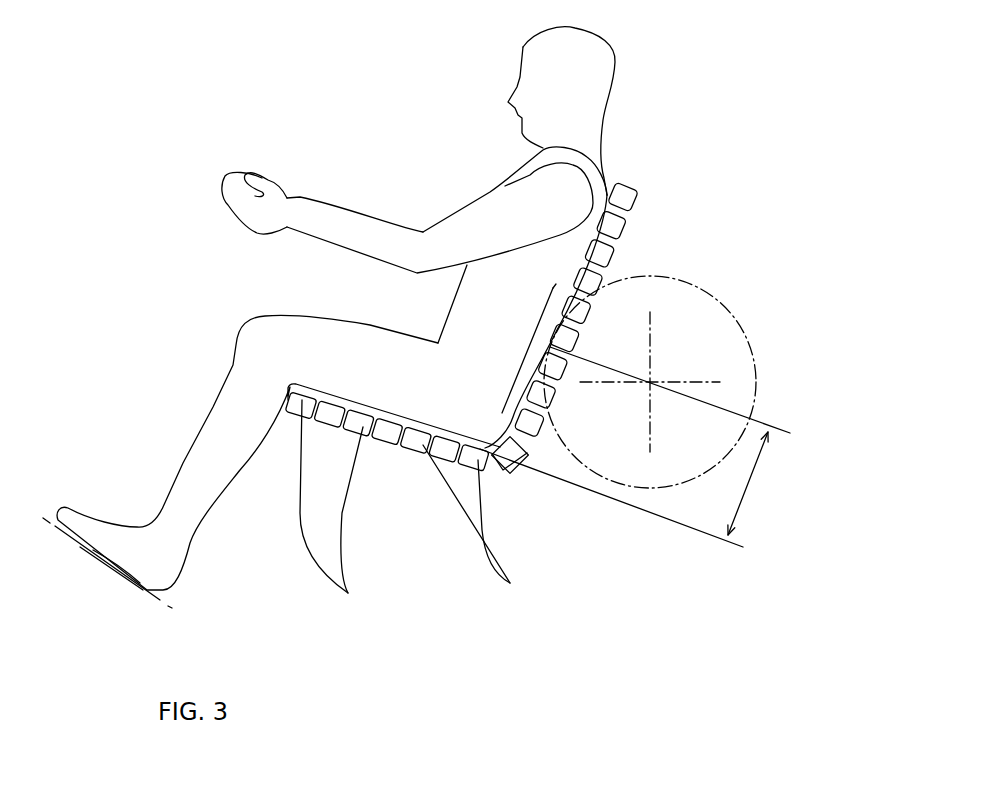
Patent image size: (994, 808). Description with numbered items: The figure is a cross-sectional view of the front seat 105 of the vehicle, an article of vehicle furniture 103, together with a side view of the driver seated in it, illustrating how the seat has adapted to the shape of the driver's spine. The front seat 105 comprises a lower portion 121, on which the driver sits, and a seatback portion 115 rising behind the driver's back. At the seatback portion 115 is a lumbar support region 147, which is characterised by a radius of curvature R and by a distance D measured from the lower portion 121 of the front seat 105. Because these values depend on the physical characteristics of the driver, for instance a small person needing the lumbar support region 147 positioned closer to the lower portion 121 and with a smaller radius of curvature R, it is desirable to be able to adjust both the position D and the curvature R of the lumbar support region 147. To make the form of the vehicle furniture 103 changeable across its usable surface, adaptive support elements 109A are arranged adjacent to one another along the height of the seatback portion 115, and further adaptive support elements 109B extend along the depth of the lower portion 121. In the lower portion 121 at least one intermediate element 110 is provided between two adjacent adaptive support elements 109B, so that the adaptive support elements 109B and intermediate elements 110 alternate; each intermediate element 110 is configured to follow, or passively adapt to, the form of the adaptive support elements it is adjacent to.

The vehicle furniture 103 is at (637, 248).
The front seat 105 is at (646, 251).
The seatback portion 115 is at (640, 232).
The adaptive support elements 109A is at (595, 313).
The adaptive support elements 109B is at (332, 408).
The intermediate element 110 is at (427, 511).
The lower portion 121 is at (370, 400).
The lumbar support region 147 is at (530, 345).
The radius of curvature R is at (667, 382).
The distance D is at (754, 483).